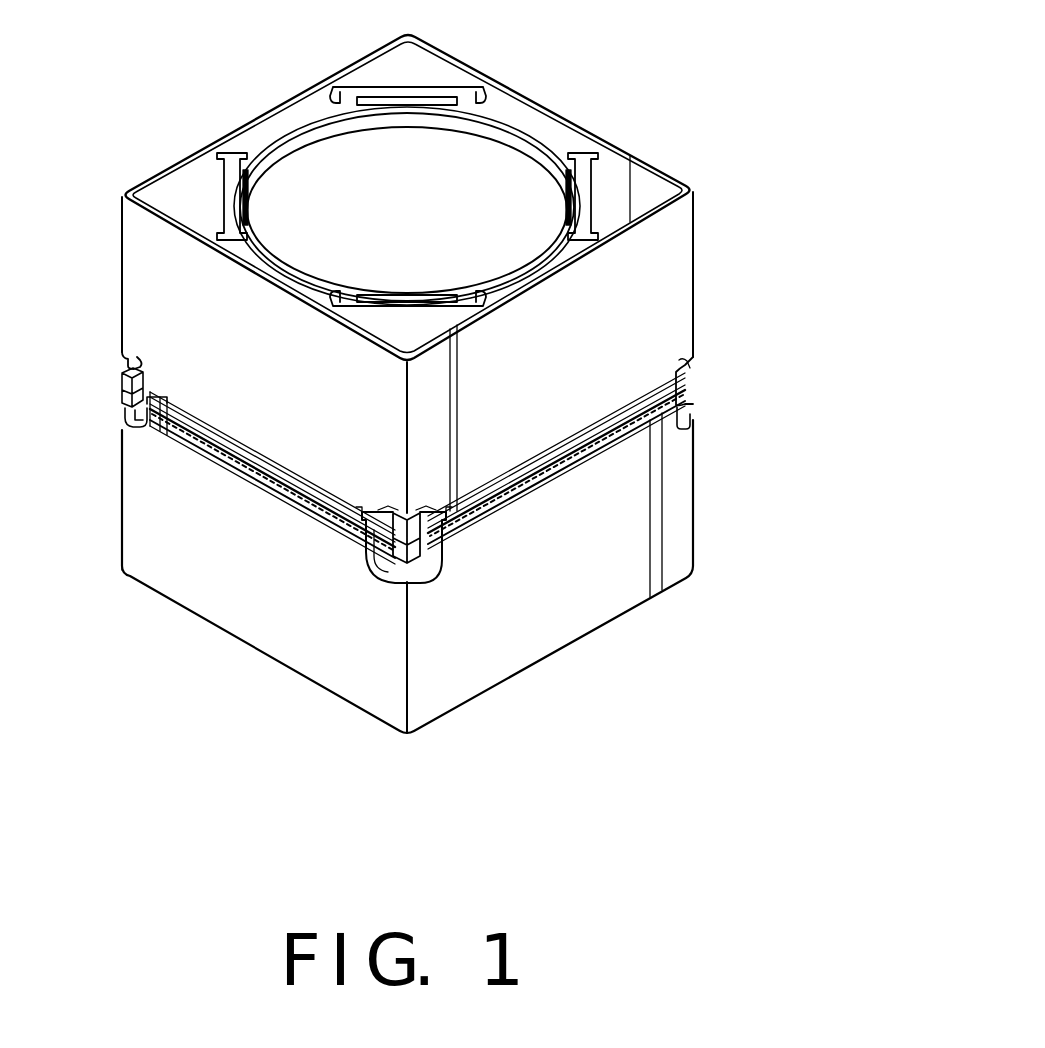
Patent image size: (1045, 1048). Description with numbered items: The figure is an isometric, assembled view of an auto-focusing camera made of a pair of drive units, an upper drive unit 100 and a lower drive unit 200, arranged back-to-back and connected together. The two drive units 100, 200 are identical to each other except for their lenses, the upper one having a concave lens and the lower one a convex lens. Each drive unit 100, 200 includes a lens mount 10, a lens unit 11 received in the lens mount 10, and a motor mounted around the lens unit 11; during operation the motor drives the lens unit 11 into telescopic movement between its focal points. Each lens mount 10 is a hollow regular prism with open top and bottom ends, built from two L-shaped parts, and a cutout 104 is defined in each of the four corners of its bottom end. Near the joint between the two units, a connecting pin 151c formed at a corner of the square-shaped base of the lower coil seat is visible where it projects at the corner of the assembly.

The upper drive unit 100 is at (702, 282).
The lower drive unit 200 is at (705, 495).
The lens unit 11 is at (437, 210).
The lens mount 10 is at (195, 322).
The cutout 104 is at (393, 563).
The connecting pin 151c is at (410, 537).